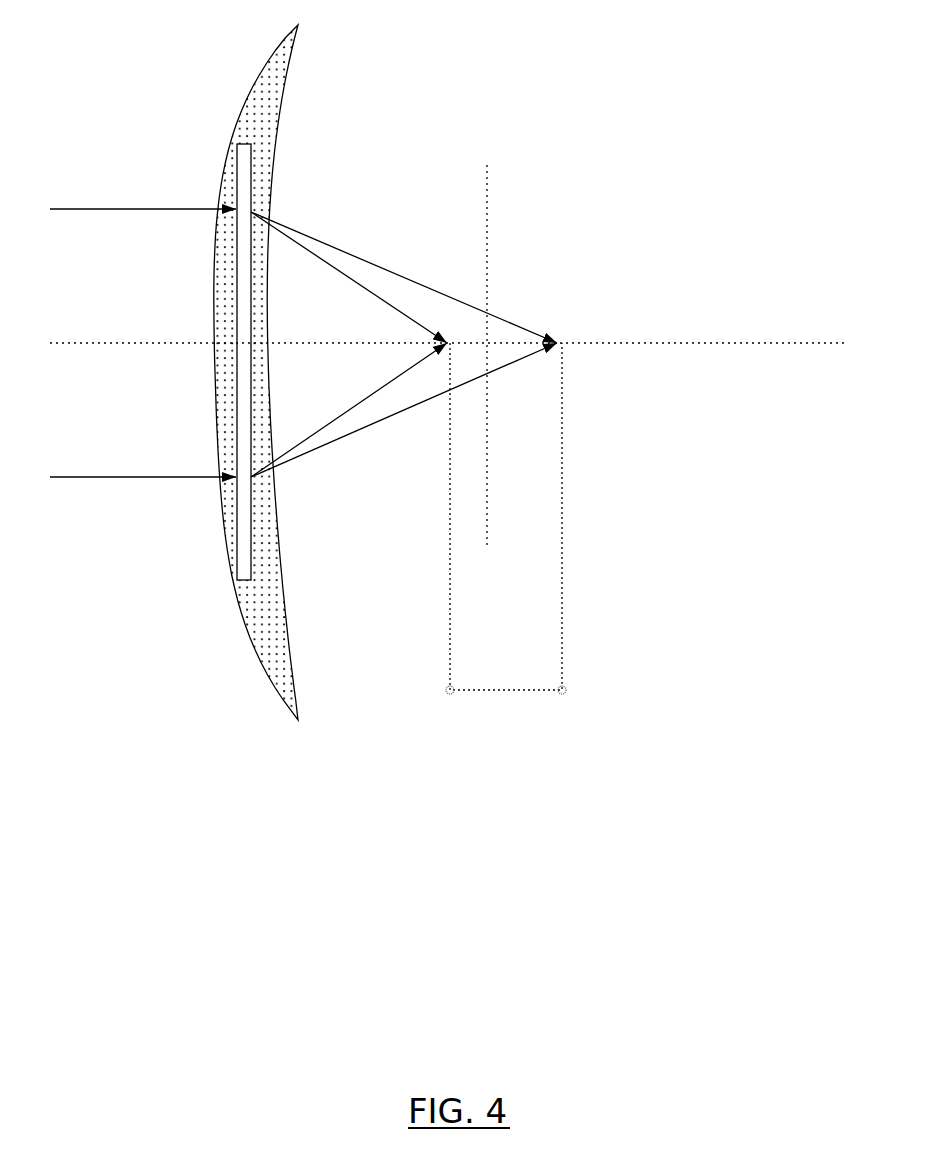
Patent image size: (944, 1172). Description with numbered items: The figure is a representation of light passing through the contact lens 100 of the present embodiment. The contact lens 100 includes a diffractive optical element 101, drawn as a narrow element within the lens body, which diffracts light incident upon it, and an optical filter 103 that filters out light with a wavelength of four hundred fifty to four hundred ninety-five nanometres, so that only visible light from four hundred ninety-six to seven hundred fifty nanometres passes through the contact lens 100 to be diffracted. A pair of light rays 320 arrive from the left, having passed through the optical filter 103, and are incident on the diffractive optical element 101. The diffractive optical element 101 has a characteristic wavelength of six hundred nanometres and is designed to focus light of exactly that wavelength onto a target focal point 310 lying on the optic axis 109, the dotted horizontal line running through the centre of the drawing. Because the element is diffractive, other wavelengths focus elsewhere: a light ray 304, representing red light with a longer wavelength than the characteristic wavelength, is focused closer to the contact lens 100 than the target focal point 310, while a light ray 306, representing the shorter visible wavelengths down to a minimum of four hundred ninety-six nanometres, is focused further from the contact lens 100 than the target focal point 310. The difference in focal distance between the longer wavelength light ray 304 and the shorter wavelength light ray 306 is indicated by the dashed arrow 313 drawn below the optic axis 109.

The contact lens 100 is at (260, 115).
The diffractive optical element 101 is at (241, 145).
The optical filter 103 is at (226, 460).
The pair of light rays 320 is at (130, 209).
The optic axis 109 is at (755, 340).
The light ray (red light) 304 is at (385, 300).
The target focal point 310 is at (488, 343).
The light ray (shorter wavelengths) 306 is at (470, 303).
The dashed arrow 313 is at (507, 693).